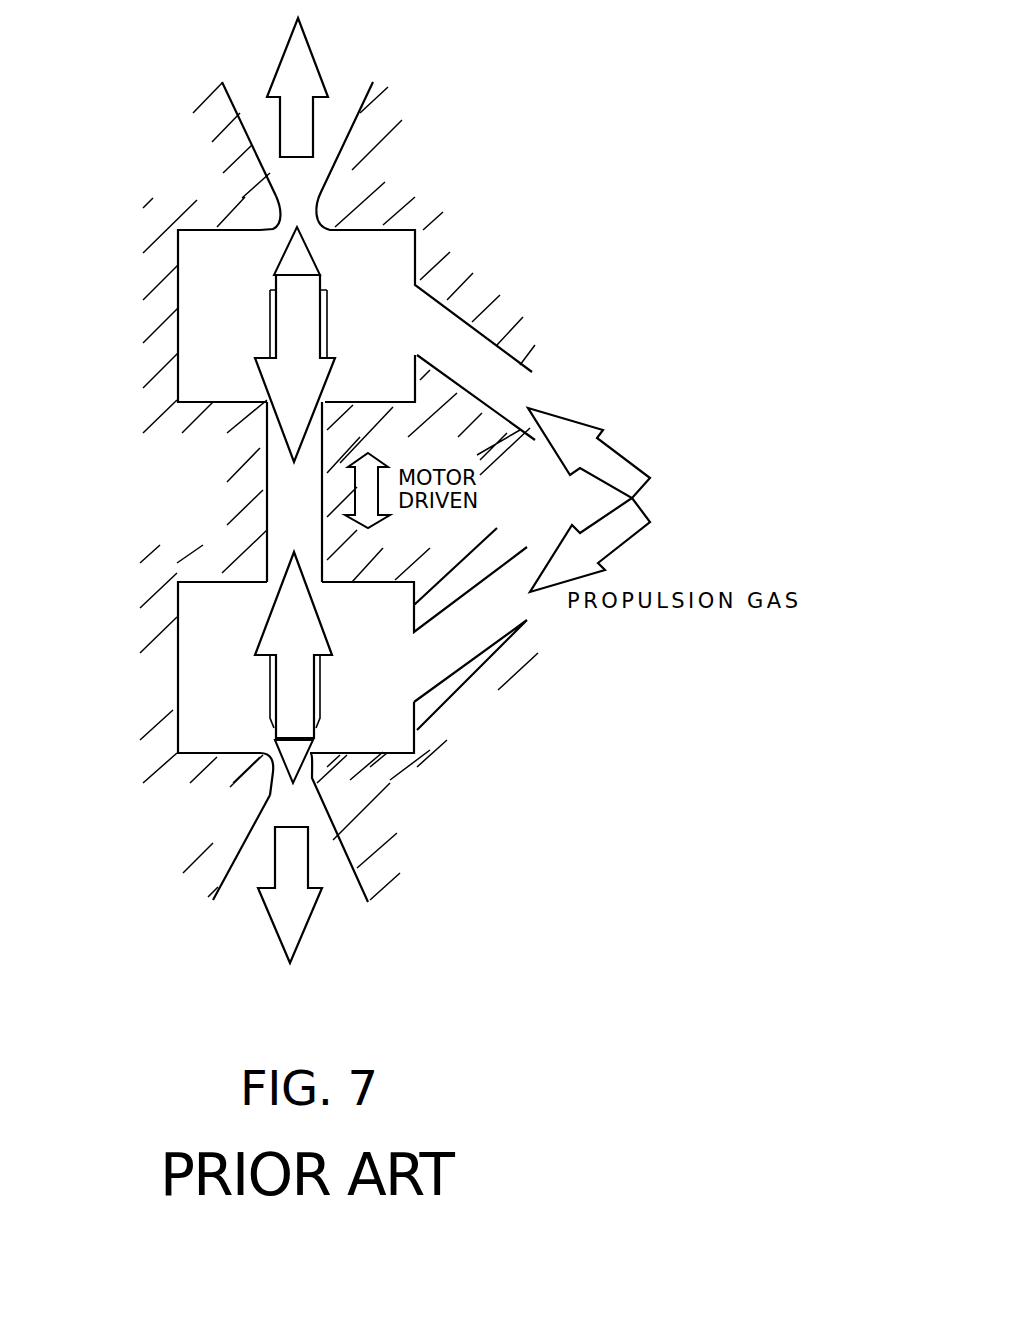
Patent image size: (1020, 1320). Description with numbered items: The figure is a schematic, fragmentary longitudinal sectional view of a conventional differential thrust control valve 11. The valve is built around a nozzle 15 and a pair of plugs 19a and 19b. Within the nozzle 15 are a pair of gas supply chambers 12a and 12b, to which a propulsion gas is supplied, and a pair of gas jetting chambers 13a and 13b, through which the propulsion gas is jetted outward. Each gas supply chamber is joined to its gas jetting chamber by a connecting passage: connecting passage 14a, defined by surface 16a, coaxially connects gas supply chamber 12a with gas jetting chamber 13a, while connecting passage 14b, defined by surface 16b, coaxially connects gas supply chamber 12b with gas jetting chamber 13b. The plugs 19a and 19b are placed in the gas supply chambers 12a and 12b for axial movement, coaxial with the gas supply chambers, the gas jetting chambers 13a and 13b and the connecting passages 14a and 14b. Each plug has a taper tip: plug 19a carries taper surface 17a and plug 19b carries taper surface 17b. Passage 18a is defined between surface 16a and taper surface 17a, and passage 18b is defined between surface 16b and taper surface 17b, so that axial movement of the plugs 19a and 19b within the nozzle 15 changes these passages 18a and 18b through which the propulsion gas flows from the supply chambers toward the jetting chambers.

The differential thrust control valve 11 is at (428, 73).
The gas supply chamber 12a is at (187, 289).
The gas supply chamber 12b is at (190, 690).
The gas jetting chamber 13a is at (248, 97).
The gas jetting chamber 13b is at (258, 875).
The connecting passage 14a is at (325, 190).
The connecting passage 14b is at (303, 780).
The nozzle 15 is at (200, 465).
The surface 16a is at (319, 233).
The surface 16b is at (315, 752).
The taper surface 17a is at (325, 288).
The taper surface 17b is at (280, 750).
The passage 18a is at (277, 227).
The passage 18b is at (275, 765).
The plug 19a is at (266, 307).
The plug 19b is at (262, 687).